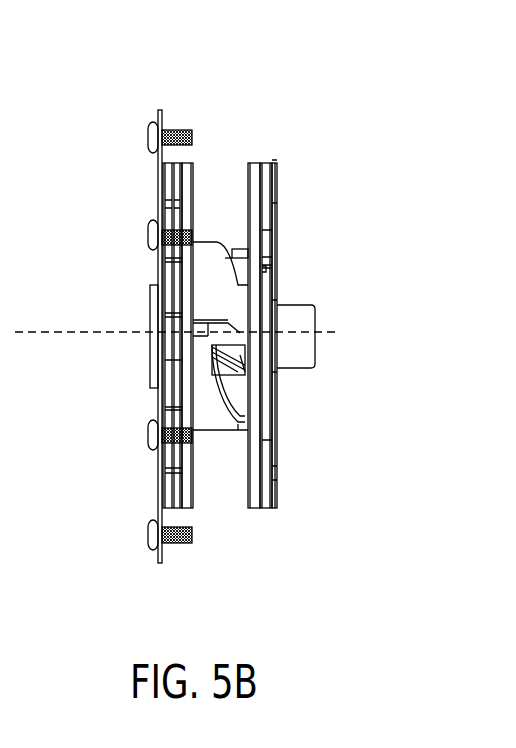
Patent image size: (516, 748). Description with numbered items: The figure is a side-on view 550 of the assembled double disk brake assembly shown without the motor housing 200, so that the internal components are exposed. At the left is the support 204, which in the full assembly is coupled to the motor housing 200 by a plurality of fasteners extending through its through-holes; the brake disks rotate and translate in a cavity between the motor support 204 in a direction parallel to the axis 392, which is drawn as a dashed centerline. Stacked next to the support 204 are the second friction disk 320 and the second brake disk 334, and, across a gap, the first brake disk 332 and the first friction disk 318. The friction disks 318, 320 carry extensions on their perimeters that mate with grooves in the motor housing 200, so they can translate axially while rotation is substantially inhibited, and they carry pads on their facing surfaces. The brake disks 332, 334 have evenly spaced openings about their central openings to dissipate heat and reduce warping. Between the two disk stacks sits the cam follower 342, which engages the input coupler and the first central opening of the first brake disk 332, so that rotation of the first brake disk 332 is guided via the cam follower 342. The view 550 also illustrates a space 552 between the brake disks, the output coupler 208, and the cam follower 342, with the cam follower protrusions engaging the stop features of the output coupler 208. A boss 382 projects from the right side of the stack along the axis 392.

The motor housing 200 is at (262, 123).
The support 204 is at (157, 177).
The output coupler 208 is at (207, 417).
The first friction disk 318 is at (275, 182).
The second friction disk 320 is at (180, 162).
The first brake disk 332 is at (257, 510).
The second brake disk 334 is at (195, 500).
The cam follower 342 is at (238, 253).
The shaft boss 382 is at (315, 310).
The axis 392 is at (50, 332).
The side-on view 550 is at (337, 92).
The space 552 is at (237, 165).